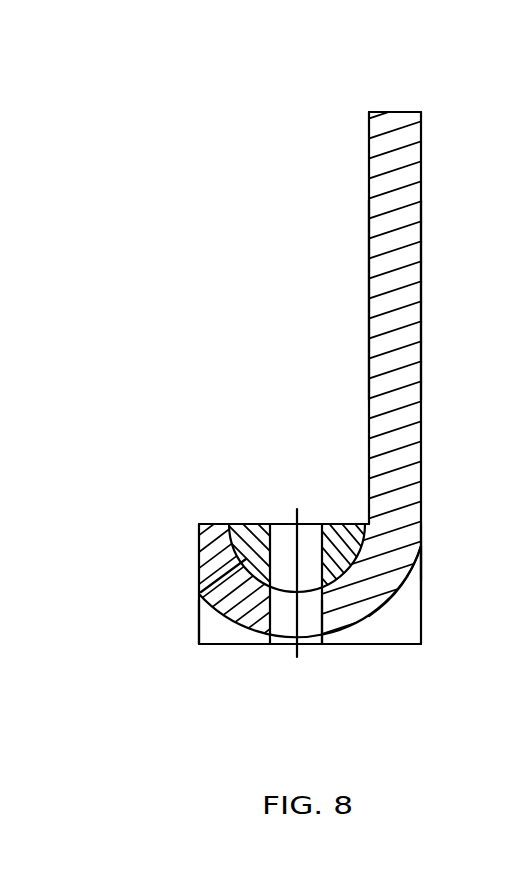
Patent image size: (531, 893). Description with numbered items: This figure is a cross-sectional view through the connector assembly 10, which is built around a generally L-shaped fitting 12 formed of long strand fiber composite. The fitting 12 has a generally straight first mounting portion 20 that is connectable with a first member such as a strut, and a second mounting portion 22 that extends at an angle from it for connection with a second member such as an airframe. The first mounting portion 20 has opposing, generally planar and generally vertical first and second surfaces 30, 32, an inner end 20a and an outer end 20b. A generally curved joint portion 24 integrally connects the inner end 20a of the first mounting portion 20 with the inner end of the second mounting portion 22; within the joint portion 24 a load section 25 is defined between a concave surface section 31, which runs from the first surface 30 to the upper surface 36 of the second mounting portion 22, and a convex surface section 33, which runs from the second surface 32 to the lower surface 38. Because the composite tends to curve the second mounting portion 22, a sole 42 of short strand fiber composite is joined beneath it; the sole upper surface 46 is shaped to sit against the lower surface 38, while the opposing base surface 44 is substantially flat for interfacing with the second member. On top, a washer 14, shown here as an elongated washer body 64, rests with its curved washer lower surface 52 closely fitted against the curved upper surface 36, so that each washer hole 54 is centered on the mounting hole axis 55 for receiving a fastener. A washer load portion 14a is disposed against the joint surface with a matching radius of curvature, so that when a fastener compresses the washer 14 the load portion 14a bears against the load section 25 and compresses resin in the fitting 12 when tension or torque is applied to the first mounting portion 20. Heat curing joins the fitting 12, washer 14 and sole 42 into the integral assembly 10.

The connector assembly 10 is at (185, 305).
The fitting 12 is at (444, 372).
The washer 14 is at (257, 497).
The washer load portion 14a is at (405, 568).
The first mounting portion 20 is at (366, 251).
The inner end of first mounting portion 20a is at (397, 523).
The outer end of first mounting portion 20b is at (393, 112).
The second mounting portion 22 is at (198, 565).
The joint portion 24 is at (422, 555).
The load section 25 is at (411, 542).
The first surface of first mounting portion 30 is at (368, 296).
The concave surface section 31 is at (364, 546).
The second surface of first mounting portion 32 is at (422, 285).
The convex surface section 33 is at (420, 557).
The upper surface of second mounting portion 36 is at (201, 593).
The lower surface of second mounting portion 38 is at (378, 637).
The sole 42 is at (199, 628).
The base surface 44 is at (227, 646).
The upper surface of sole 46 is at (343, 636).
The washer lower surface 52 is at (268, 524).
The washer hole 54 is at (276, 646).
The mounting hole axis 55 is at (300, 652).
The elongated washer body 64 is at (235, 523).